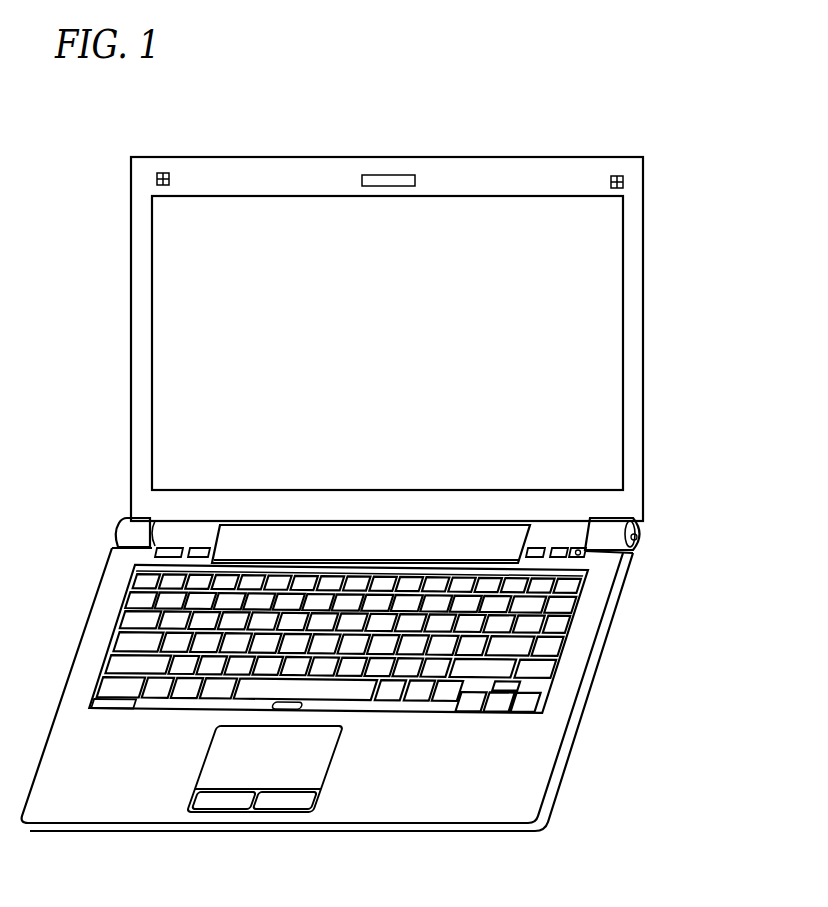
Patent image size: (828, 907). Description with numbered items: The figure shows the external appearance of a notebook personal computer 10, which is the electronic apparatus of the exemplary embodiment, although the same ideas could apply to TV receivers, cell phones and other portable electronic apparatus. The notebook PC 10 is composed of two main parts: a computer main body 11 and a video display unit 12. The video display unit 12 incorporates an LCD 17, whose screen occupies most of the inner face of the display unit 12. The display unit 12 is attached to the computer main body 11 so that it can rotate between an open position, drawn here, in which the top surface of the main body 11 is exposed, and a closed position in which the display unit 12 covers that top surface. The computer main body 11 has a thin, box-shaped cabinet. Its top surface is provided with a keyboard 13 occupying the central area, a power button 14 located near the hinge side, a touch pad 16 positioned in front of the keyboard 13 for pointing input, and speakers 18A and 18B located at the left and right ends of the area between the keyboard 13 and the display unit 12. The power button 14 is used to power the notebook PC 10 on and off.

The notebook personal computer 10 is at (373, 527).
The computer main body 11 is at (557, 777).
The video display unit 12 is at (420, 339).
The keyboard 13 is at (512, 666).
The power button 14 is at (582, 555).
The touch pad 16 is at (228, 760).
The LCD 17 is at (593, 271).
The speaker 18A is at (203, 533).
The speaker 18B is at (548, 532).